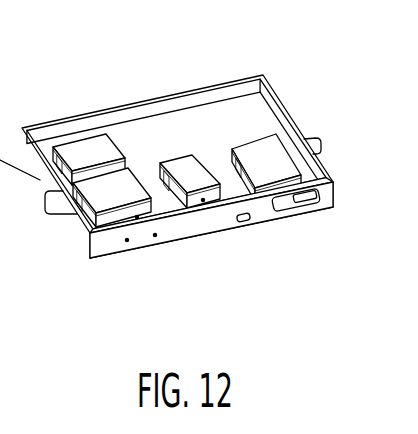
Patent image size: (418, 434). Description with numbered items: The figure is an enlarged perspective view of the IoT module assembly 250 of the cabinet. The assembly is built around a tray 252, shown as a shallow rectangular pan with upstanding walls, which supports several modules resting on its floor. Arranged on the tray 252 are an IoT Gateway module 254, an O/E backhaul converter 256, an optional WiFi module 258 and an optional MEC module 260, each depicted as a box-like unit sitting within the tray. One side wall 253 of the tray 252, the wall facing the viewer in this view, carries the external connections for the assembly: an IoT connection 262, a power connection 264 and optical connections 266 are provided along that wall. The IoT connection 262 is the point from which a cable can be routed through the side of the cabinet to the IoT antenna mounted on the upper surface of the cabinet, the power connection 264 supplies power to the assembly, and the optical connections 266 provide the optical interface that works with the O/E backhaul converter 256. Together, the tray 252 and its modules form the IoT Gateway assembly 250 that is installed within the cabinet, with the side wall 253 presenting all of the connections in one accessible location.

The IoT module assembly 250 is at (174, 187).
The tray 252 is at (255, 115).
The side wall 253 is at (181, 240).
The IoT Gateway module 254 is at (112, 200).
The O/E backhaul converter 256 is at (273, 150).
The WiFi module 258 is at (204, 203).
The MEC module 260 is at (98, 152).
The IoT connection 262 is at (127, 242).
The power connection 264 is at (155, 238).
The optical connections 266 is at (283, 208).